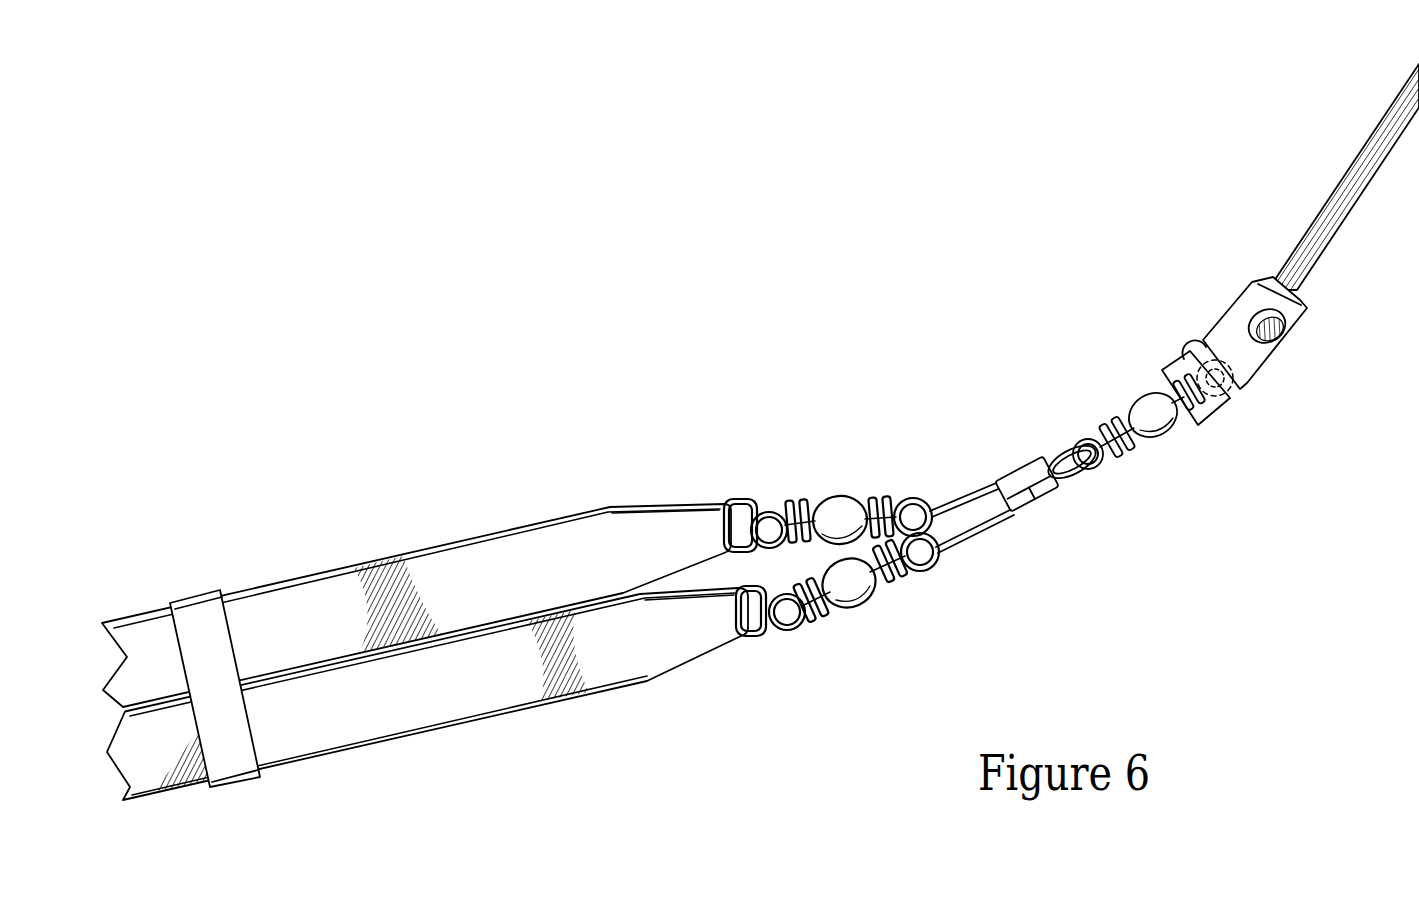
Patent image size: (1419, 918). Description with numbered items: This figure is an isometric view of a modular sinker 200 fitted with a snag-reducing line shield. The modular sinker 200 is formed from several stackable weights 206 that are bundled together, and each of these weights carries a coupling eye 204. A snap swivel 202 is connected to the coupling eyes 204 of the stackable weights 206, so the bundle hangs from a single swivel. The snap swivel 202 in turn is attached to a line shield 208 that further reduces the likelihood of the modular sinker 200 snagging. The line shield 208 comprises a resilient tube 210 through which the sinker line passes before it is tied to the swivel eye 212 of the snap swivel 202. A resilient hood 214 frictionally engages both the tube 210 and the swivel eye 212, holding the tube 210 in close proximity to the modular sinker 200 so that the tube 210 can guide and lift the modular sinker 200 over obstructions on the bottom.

The modular sinker 200 is at (590, 428).
The snap swivel 202 is at (1029, 438).
The coupling eyes 204 is at (923, 508).
The stackable weights 206 is at (718, 583).
The line shield 208 is at (1218, 255).
The resilient tube 210 is at (1340, 197).
The swivel eye 212 is at (1223, 393).
The resilient hood 214 is at (1225, 330).